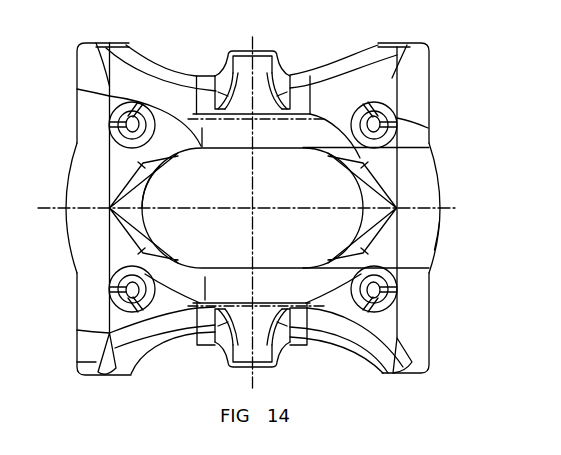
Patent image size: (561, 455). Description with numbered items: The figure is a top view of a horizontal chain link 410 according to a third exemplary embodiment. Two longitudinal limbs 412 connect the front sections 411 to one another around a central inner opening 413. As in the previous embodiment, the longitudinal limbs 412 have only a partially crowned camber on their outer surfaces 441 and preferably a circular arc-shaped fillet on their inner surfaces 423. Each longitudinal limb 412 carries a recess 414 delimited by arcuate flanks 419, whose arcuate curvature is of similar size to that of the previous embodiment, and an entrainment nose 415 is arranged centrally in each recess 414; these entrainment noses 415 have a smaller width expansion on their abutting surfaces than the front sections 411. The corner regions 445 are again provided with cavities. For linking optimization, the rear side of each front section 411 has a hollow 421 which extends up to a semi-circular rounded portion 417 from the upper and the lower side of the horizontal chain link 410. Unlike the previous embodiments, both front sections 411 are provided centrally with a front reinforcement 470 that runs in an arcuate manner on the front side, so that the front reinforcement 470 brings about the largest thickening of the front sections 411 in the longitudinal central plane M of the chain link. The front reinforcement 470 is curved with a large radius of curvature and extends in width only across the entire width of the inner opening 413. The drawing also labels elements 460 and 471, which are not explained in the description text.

The horizontal chain link 410 is at (452, 51).
The front section 411 is at (415, 117).
The longitudinal limb 412 is at (166, 98).
The inner opening 413 is at (287, 198).
The recess 414 is at (216, 40).
The entrainment nose 415 is at (259, 72).
The semi-circular rounded portion 417 is at (359, 219).
The arcuate flank 419 is at (368, 55).
The hollow 421 is at (363, 198).
The inner surface 423 is at (243, 133).
The outer surface 441 is at (343, 90).
The corner region 445 is at (116, 97).
The fastening boss 460 is at (379, 126).
The front reinforcement 470 is at (72, 190).
The lateral surface 471 is at (441, 226).
The longitudinal central plane M is at (180, 205).